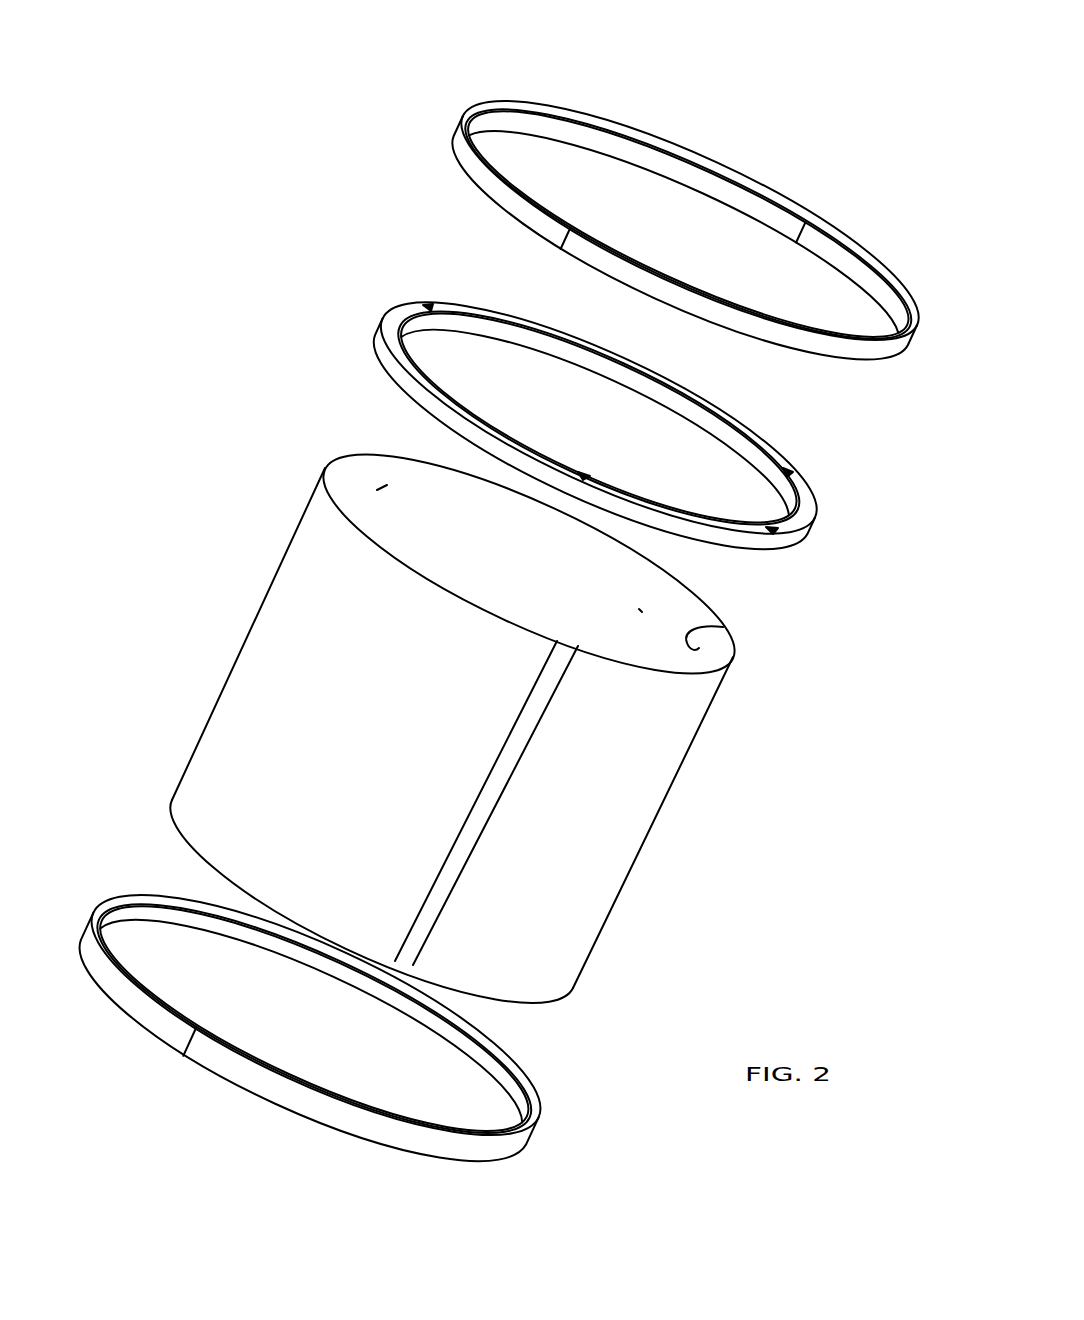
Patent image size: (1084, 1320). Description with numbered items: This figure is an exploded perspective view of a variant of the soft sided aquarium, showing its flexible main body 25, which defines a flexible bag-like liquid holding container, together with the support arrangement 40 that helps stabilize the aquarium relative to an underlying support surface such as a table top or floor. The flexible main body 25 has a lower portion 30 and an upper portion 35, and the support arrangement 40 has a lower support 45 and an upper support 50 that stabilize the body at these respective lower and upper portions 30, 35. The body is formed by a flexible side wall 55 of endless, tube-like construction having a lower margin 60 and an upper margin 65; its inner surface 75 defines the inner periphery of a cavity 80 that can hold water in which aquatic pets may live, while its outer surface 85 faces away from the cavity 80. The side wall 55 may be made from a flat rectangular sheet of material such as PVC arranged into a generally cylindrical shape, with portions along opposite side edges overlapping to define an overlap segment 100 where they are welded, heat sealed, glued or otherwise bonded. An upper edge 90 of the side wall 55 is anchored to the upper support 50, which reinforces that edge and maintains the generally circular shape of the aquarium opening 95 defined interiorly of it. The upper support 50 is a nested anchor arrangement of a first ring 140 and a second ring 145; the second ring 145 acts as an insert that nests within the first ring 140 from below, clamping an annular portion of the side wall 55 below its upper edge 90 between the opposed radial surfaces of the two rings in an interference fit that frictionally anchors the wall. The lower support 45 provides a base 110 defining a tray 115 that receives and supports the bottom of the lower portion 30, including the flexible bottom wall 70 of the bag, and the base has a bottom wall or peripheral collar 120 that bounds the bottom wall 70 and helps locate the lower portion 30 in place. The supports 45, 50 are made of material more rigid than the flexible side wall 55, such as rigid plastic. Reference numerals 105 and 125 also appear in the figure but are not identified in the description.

The flexible main body 25 is at (179, 642).
The lower portion 30 is at (175, 741).
The upper portion 35 is at (285, 463).
The support arrangement 40 is at (599, 1185).
The lower support 45 is at (521, 1184).
The upper support 50 is at (374, 155).
The flexible side wall 55 is at (629, 772).
The lower margin 60 is at (607, 999).
The upper margin 65 is at (759, 711).
The flexible bottom wall 70 is at (290, 912).
The inner surface 75 is at (723, 627).
The cavity 80 is at (663, 595).
The outer surface 85 is at (629, 850).
The upper edge 90 is at (327, 467).
The opening 95 is at (394, 470).
The overlap segment 100 is at (411, 865).
The slot edge 105 is at (483, 791).
The base 110 is at (551, 1133).
The tray 115 is at (494, 1089).
The bottom wall 120 is at (153, 943).
The upper rim of base ring 125 is at (104, 909).
The first ring 140 is at (447, 78).
The second ring 145 is at (361, 277).